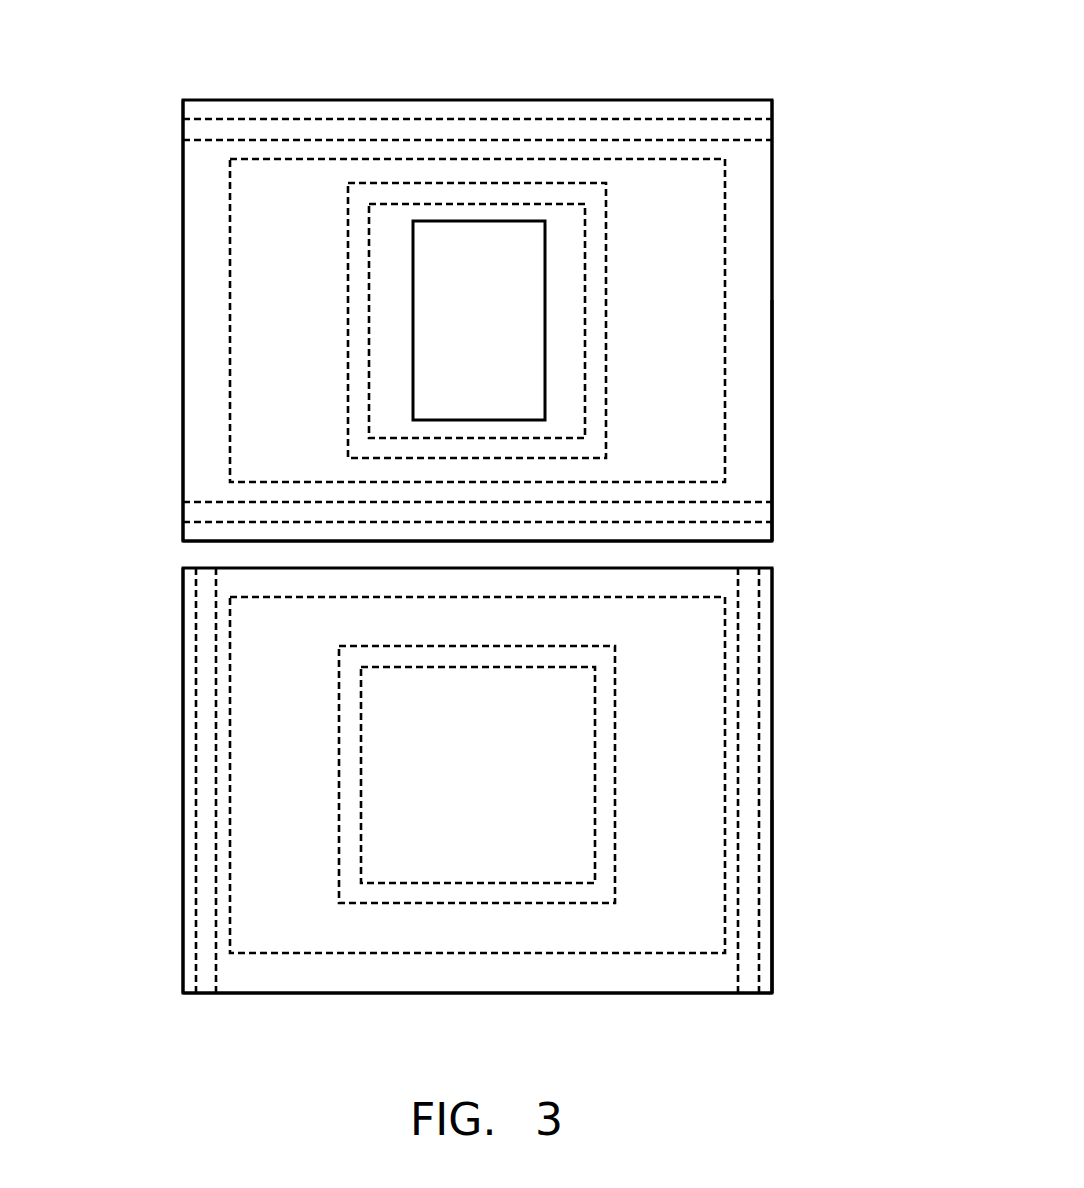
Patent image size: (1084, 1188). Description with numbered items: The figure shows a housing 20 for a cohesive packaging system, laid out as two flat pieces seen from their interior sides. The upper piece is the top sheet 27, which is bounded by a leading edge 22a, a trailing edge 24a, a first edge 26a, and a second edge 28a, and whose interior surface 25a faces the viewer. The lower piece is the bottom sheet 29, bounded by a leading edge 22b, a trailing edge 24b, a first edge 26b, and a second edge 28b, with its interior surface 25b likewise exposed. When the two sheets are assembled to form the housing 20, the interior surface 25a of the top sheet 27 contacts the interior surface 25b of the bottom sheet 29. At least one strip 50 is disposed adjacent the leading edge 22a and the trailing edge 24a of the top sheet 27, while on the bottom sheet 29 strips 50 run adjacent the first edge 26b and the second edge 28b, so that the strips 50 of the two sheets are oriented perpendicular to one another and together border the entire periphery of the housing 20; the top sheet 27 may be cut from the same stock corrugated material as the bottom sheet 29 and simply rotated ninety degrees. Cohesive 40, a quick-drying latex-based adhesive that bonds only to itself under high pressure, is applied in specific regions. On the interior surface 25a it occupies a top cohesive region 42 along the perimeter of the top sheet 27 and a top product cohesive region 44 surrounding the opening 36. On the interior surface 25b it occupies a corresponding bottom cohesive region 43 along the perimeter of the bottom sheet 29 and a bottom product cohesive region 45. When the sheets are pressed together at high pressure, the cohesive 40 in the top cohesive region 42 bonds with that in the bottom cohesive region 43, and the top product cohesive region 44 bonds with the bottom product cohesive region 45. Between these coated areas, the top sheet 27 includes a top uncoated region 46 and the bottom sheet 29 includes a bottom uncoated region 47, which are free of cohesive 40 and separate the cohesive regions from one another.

The housing 20 is at (138, 562).
The leading edge 22a is at (667, 100).
The leading edge 22b is at (702, 568).
The trailing edge 24a is at (227, 541).
The trailing edge 24b is at (627, 993).
The interior surface 25a is at (283, 292).
The interior surface 25b is at (255, 888).
The first edge 26a is at (772, 430).
The first edge 26b is at (772, 915).
The top sheet 27 is at (772, 200).
The second edge 28a is at (182, 325).
The second edge 28b is at (183, 782).
The bottom sheet 29 is at (772, 737).
The opening 36 is at (478, 220).
The cohesive 40 is at (193, 195).
The top cohesive region 42 is at (728, 290).
The bottom cohesive region 43 is at (716, 584).
The top product cohesive region 44 is at (372, 192).
The bottom product cohesive region 45 is at (352, 813).
The top uncoated region 46 is at (702, 387).
The bottom uncoated region 47 is at (683, 840).
The strip 50 is at (253, 130).